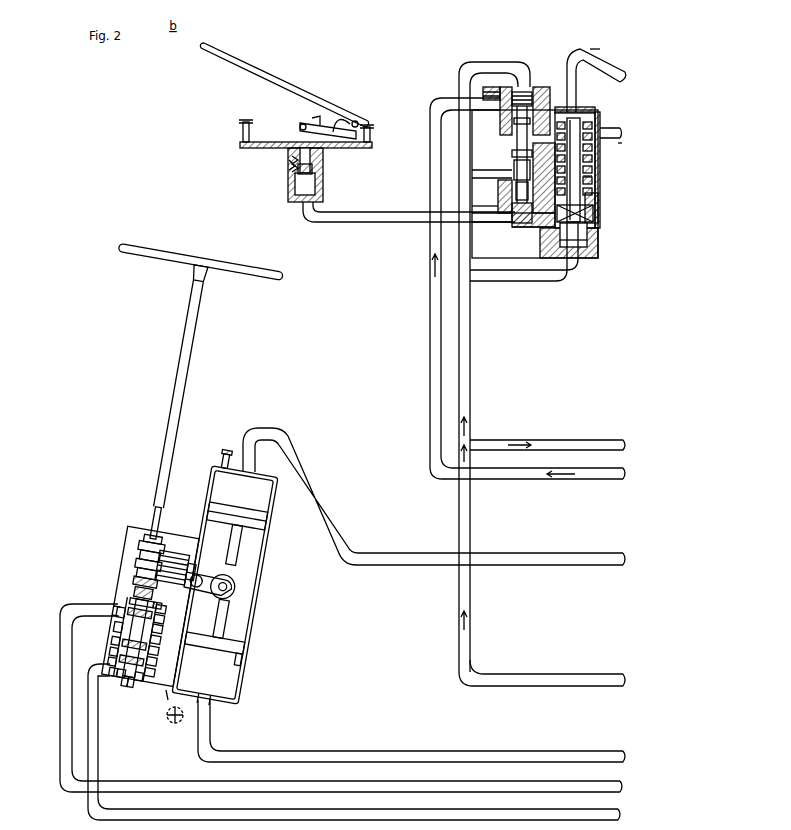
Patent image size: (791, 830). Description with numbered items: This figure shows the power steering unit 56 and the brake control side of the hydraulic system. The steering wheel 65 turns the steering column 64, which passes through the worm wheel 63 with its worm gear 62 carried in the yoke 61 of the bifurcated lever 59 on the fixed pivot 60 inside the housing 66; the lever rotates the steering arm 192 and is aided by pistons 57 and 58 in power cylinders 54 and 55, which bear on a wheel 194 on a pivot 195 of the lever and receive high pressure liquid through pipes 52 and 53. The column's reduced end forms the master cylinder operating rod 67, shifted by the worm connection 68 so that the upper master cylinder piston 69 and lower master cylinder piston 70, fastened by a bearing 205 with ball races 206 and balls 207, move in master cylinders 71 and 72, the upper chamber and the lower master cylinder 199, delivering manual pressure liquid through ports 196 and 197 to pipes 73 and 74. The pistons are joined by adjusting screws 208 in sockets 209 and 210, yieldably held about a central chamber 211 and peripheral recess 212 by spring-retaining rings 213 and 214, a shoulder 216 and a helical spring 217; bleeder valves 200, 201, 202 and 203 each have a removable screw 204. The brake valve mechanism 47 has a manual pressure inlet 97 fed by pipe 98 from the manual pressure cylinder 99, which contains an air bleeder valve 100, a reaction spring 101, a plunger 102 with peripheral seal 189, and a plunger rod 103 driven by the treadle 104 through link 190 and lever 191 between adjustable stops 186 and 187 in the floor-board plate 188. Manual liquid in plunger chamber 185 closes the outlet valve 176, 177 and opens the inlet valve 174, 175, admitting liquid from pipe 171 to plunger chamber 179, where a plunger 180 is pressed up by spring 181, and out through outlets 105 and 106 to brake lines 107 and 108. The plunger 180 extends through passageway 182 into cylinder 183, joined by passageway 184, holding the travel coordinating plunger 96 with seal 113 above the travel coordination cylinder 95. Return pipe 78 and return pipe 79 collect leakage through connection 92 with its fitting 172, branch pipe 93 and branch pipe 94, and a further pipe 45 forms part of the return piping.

The return pipe 45 is at (610, 480).
The brake valve mechanism 47 is at (553, 74).
The pipe 52 is at (585, 557).
The pipe 53 is at (582, 760).
The power cylinder 54 is at (237, 506).
The power cylinder 55 is at (228, 681).
The steering unit 56 is at (274, 547).
The piston 57 is at (236, 519).
The piston 58 is at (241, 668).
The lever 59 is at (217, 573).
The fixed pivot 60 is at (183, 560).
The yoke 61 is at (170, 555).
The worm gear 62 is at (163, 538).
The worm wheel 63 is at (143, 558).
The steering column 64 is at (150, 509).
The steering wheel 65 is at (144, 251).
The housing 66 is at (132, 548).
The master cylinder operating rod 67 is at (133, 681).
The worm connection 68 is at (183, 614).
The upper master cylinder piston 69 is at (110, 639).
The lower master cylinder piston 70 is at (97, 688).
The master cylinder 71 is at (110, 628).
The master cylinder 72 is at (120, 689).
The pipe 73 is at (60, 731).
The pipe 74 is at (88, 804).
The pipe 78 is at (586, 678).
The return pipe 79 is at (591, 443).
The connection 92 is at (496, 64).
The branch pipe 93 is at (510, 172).
The branch pipe 94 is at (512, 276).
The travel coordination cylinder 95 is at (565, 246).
The travel coordinating plunger 96 is at (596, 242).
The manual pressure inlet 97 is at (500, 214).
The pipe 98 is at (352, 217).
The manual pressure cylinder 99 is at (300, 207).
The air bleeder valve 100 is at (285, 171).
The reaction spring 101 is at (294, 192).
The plunger 102 is at (316, 170).
The plunger rod 103 is at (300, 135).
The treadle 104 is at (226, 56).
The outlet 105 is at (578, 104).
The outlet 106 is at (612, 136).
The brake line 107 is at (618, 66).
The brake line 108 is at (622, 141).
The seal 113 is at (600, 217).
The pipe 171 is at (428, 311).
The fitting 172 is at (492, 102).
The inlet valve 174 is at (510, 112).
The inlet valve 175 is at (514, 126).
The outlet valve 176 is at (514, 151).
The outlet valve 177 is at (514, 176).
The plunger chamber 179 is at (602, 121).
The plunger 180 is at (584, 165).
The spring 181 is at (594, 180).
The passageway 182 is at (596, 198).
The cylinder 183 is at (533, 212).
The passageway 184 is at (540, 216).
The plunger chamber 185 is at (520, 228).
The adjustable stop 186 is at (242, 139).
The adjustable stop 187 is at (372, 138).
The floor-board plate 188 is at (354, 149).
The peripheral seal 189 is at (294, 179).
The link 190 is at (357, 120).
The lever 191 is at (312, 118).
The steering arm 192 is at (166, 695).
The wheel 194 is at (240, 598).
The pivot 195 is at (230, 586).
The port 196 is at (93, 601).
The port 197 is at (107, 681).
The lower master cylinder 199 is at (142, 681).
The air bleeder valve 200 is at (178, 605).
The air bleeder valve 201 is at (219, 706).
The air bleeder valve 202 is at (222, 460).
The air bleeder valve 203 is at (181, 720).
The removable screw 204 is at (226, 452).
The bearing 205 is at (140, 694).
The ball races 206 is at (110, 678).
The balls 207 is at (140, 597).
The adjusting screws 208 is at (142, 575).
The socket 209 is at (120, 613).
The socket 210 is at (155, 605).
The central chamber 211 is at (171, 638).
The peripheral recess 212 is at (168, 661).
The spring-retaining ring 213 is at (112, 668).
The spring-retaining ring 214 is at (173, 668).
The shoulder 216 is at (171, 679).
The helical spring 217 is at (110, 654).